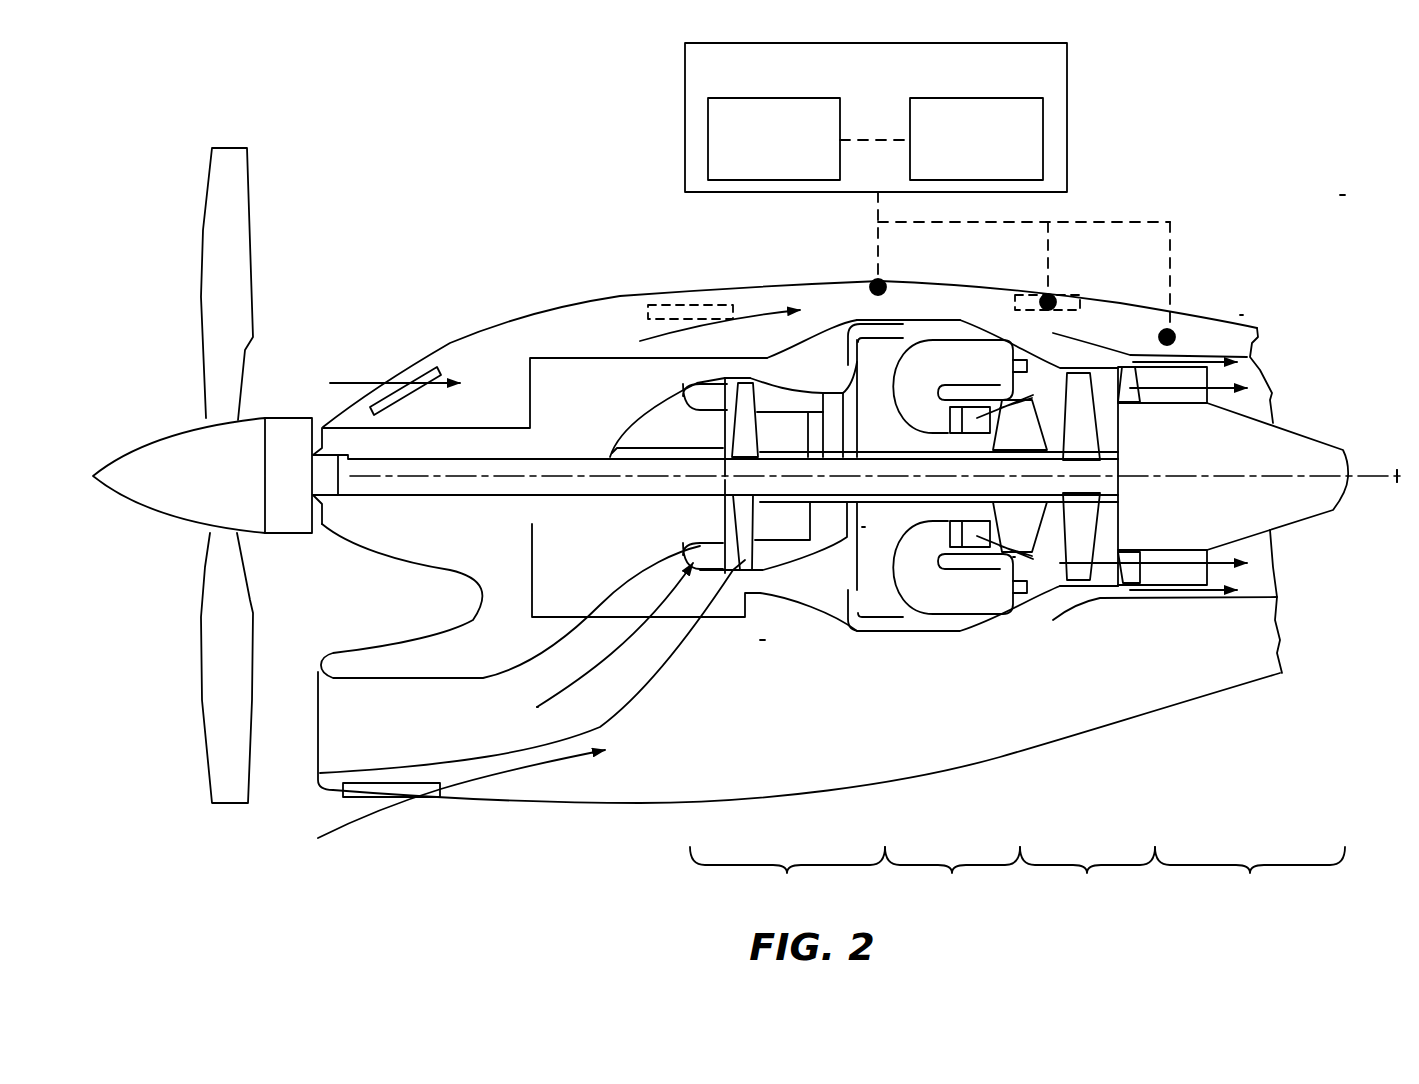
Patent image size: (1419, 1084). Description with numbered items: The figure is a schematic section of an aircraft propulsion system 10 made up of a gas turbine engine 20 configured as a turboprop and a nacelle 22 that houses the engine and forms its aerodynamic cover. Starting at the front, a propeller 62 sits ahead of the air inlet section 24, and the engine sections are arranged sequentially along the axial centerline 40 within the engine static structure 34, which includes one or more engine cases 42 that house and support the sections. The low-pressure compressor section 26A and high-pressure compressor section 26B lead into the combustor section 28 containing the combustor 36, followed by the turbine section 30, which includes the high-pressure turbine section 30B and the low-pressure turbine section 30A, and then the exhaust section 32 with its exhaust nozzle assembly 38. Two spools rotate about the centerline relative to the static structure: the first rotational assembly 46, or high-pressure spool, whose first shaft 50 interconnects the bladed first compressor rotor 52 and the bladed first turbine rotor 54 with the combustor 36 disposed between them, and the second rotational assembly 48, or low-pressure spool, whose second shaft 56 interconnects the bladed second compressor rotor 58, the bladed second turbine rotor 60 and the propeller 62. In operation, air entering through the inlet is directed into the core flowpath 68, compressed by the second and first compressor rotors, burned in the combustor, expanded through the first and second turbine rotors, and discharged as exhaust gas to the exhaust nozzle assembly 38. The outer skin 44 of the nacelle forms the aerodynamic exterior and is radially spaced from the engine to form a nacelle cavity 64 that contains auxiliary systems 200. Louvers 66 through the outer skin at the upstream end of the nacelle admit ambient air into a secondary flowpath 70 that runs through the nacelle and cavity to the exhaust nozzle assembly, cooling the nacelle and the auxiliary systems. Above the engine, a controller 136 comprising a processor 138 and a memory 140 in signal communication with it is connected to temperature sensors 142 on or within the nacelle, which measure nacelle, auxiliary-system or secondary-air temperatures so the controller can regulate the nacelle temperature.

The propulsion system 10 is at (1352, 188).
The gas turbine engine 20 is at (763, 645).
The nacelle 22 is at (1245, 312).
The air inlet section 24 is at (290, 782).
The low-pressure compressor section 26A is at (722, 518).
The high-pressure compressor section 26B is at (867, 527).
The combustor section 28 is at (952, 878).
The turbine section 30 is at (1087, 878).
The low-pressure turbine section 30A is at (1103, 528).
The high-pressure turbine section 30B is at (1015, 562).
The exhaust section 32 is at (1250, 878).
The engine static structure 34 is at (565, 352).
The combustor 36 is at (970, 597).
The exhaust nozzle assembly 38 is at (1250, 576).
The axial centerline 40 is at (1395, 482).
The engine case 42 is at (970, 320).
The outer skin 44 is at (745, 290).
The first rotational assembly 46 is at (883, 448).
The second rotational assembly 48 is at (770, 532).
The first shaft 50 is at (908, 455).
The bladed first compressor rotor 52 is at (826, 435).
The bladed first turbine rotor 54 is at (1017, 425).
The second shaft 56 is at (640, 470).
The bladed second compressor rotor 58 is at (735, 423).
The bladed second turbine rotor 60 is at (1100, 442).
The propeller 62 is at (183, 538).
The nacelle cavity 64 is at (605, 330).
The louvers 66 is at (420, 372).
The core flowpath 68 is at (603, 653).
The secondary flowpath 70 is at (358, 383).
The controller 136 is at (1067, 70).
The processor 138 is at (708, 130).
The memory 140 is at (1043, 130).
The temperature sensors 142 is at (870, 278).
The auxiliary systems 200 is at (690, 300).